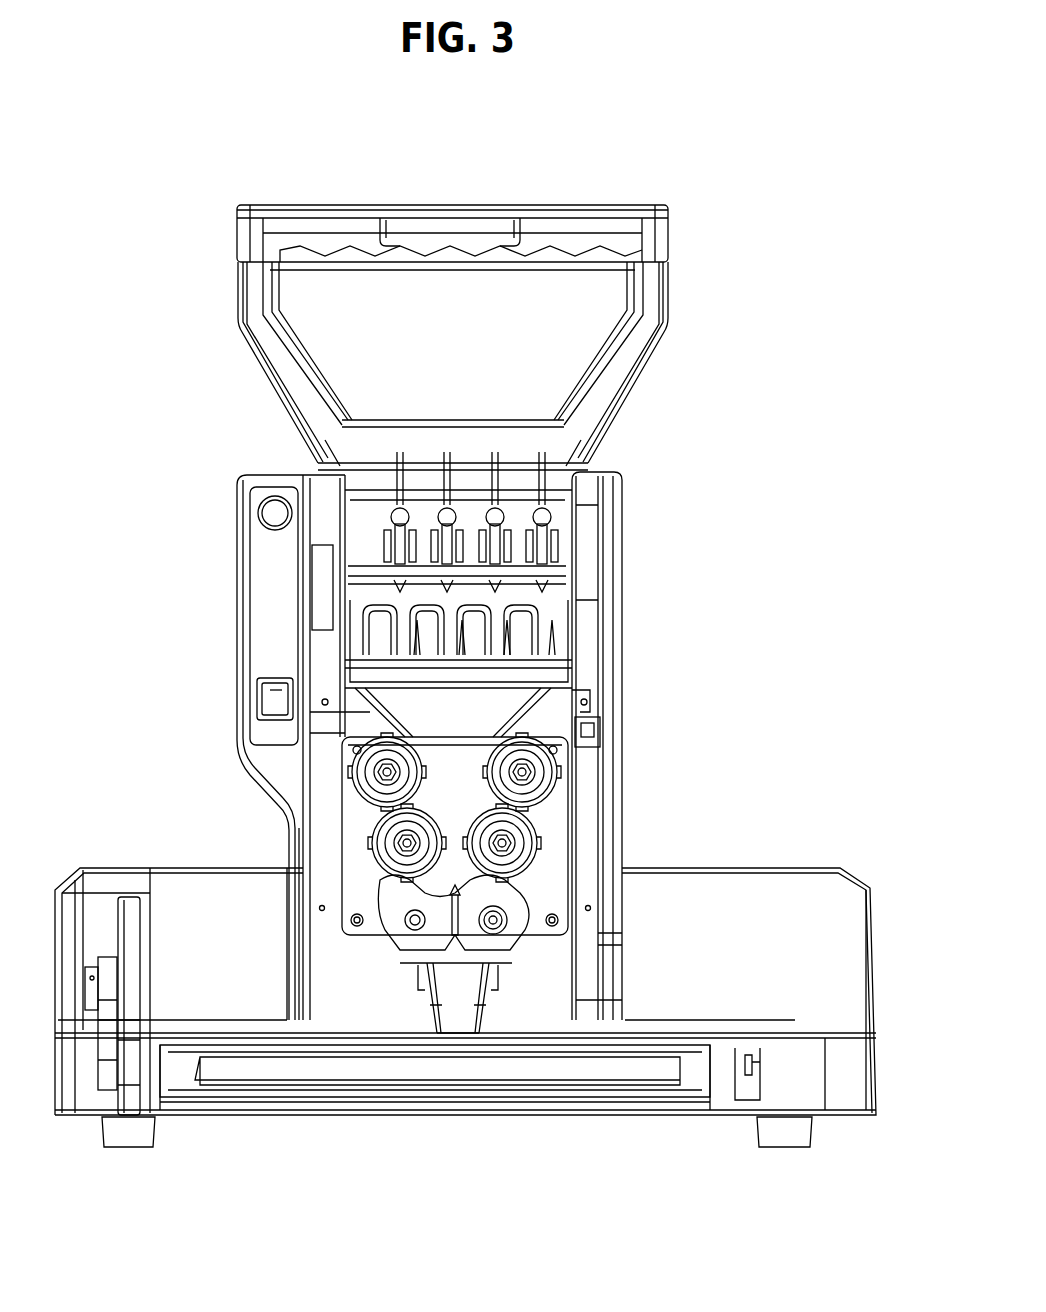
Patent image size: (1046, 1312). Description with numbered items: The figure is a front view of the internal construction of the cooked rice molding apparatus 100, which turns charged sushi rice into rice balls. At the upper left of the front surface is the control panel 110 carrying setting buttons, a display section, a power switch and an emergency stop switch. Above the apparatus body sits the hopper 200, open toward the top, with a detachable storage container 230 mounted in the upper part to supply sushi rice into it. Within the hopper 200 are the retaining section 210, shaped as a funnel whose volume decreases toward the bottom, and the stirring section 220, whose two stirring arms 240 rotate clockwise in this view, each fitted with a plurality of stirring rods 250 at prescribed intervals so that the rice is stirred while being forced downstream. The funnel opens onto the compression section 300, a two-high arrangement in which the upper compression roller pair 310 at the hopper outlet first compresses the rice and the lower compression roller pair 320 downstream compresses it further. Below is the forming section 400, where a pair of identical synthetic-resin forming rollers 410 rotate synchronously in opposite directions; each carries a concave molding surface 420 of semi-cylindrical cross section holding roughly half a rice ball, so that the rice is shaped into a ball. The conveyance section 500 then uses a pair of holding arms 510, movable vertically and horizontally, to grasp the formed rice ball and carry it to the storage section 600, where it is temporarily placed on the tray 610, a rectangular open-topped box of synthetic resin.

The cooked rice molding apparatus 100 is at (745, 630).
The control panel 110 is at (255, 580).
The hopper 200 is at (733, 453).
The retaining section 210 is at (570, 620).
The stirring section 220 is at (588, 516).
The storage container 230 is at (643, 375).
The stirring arms 240 is at (565, 597).
The stirring rods 250 is at (447, 455).
The compression section 300 is at (585, 790).
The upper compression roller pair 310 is at (360, 774).
The lower compression roller pair 320 is at (378, 842).
The forming section 400 is at (556, 884).
The forming rollers 410 is at (356, 920).
The concave molding surface 420 is at (450, 915).
The conveyance section 500 is at (445, 1048).
The holding arms 510 is at (428, 1002).
The storage section 600 is at (328, 1130).
The tray 610 is at (529, 1090).